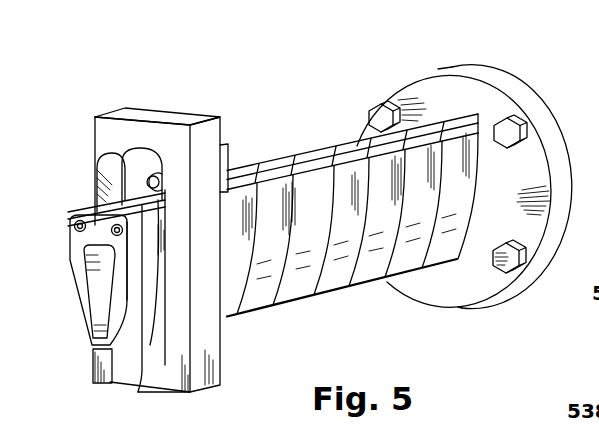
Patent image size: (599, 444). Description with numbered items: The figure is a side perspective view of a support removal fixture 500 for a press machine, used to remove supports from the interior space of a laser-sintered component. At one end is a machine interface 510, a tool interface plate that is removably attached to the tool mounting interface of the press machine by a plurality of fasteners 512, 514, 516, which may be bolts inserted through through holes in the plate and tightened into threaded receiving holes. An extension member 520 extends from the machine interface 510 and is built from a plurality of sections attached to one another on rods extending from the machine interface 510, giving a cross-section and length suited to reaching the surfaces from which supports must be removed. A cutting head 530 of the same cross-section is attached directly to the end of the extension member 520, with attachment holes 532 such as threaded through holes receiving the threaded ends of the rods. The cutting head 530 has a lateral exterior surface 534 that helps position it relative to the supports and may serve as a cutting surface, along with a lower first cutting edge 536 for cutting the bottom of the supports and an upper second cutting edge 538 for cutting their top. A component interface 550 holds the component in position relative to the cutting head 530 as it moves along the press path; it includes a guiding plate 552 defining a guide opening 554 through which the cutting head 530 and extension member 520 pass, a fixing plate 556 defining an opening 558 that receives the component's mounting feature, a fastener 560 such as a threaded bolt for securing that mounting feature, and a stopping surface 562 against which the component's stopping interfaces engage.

The support removal fixture 500 is at (278, 84).
The machine interface 510 is at (508, 70).
The fastener 512 is at (372, 108).
The fastener 514 is at (520, 122).
The fastener 516 is at (505, 272).
The extension member 520 is at (336, 290).
The cutting head 530 is at (133, 318).
The attachment holes 532 is at (112, 226).
The lateral exterior surface 534 is at (120, 336).
The first cutting edge 536 is at (94, 352).
The second cutting edge 538 is at (88, 254).
The component interface 550 is at (168, 224).
The guiding plate 552 is at (178, 352).
The guide opening 554 is at (166, 273).
The fixing plate 556 is at (102, 148).
The opening 558 is at (100, 166).
The fastener 560 is at (156, 180).
The stopping surface 562 is at (118, 128).